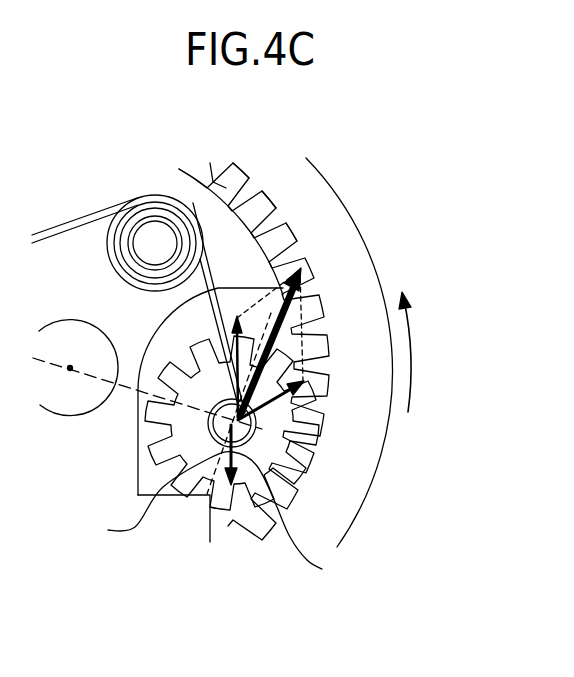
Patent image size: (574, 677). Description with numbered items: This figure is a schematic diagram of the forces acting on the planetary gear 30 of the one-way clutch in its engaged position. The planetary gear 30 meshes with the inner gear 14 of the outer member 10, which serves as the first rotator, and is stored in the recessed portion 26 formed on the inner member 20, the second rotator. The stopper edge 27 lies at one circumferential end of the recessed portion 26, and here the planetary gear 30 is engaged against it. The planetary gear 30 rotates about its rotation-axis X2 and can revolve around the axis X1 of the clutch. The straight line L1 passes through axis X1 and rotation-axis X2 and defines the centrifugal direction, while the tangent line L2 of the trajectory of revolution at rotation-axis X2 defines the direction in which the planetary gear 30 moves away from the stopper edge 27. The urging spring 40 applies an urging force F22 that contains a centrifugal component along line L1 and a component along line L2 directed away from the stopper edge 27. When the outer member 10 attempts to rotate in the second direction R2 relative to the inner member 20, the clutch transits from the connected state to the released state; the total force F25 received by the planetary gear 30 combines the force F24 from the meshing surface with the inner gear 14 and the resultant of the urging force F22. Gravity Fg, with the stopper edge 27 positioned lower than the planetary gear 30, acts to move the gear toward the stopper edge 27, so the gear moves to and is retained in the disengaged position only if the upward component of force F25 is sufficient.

The outer member 10 is at (362, 228).
The inner gear 14 is at (232, 172).
The inner member 20 is at (278, 199).
The recessed portion 26 is at (142, 343).
The stopper edge 27 is at (203, 516).
The planetary gear 30 is at (290, 470).
The urging spring 40 is at (112, 208).
The axis X1 is at (78, 368).
The rotation-axis X2 is at (207, 447).
The straight line L1 is at (133, 387).
The tangent line L2 is at (175, 428).
The force received from the meshing surface F24 is at (235, 344).
The force received by the planetary gear F25 is at (287, 320).
The urging force F22 is at (290, 407).
The gravity Fg is at (288, 508).
The second direction R2 is at (424, 352).